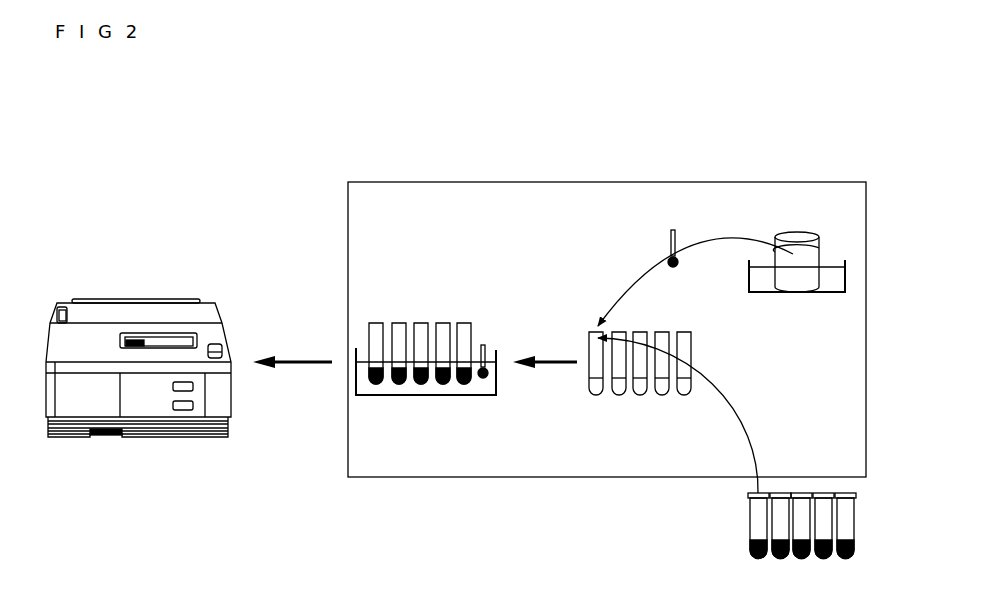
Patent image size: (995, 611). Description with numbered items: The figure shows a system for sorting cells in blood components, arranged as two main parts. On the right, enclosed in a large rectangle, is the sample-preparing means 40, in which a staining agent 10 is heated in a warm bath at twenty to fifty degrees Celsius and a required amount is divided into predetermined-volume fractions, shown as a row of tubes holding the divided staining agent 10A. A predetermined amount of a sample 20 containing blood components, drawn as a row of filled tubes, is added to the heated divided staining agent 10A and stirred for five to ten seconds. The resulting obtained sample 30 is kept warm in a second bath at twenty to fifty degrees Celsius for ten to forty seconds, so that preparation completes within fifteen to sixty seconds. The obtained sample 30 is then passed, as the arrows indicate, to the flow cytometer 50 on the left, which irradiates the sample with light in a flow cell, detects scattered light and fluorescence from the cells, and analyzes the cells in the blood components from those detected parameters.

The staining agent 10 is at (823, 261).
The divided staining agent 10A is at (596, 352).
The sample containing blood components 20 is at (747, 539).
The obtained sample 30 is at (399, 319).
The sample-preparing means 40 is at (508, 178).
The flow cytometer 50 is at (171, 297).